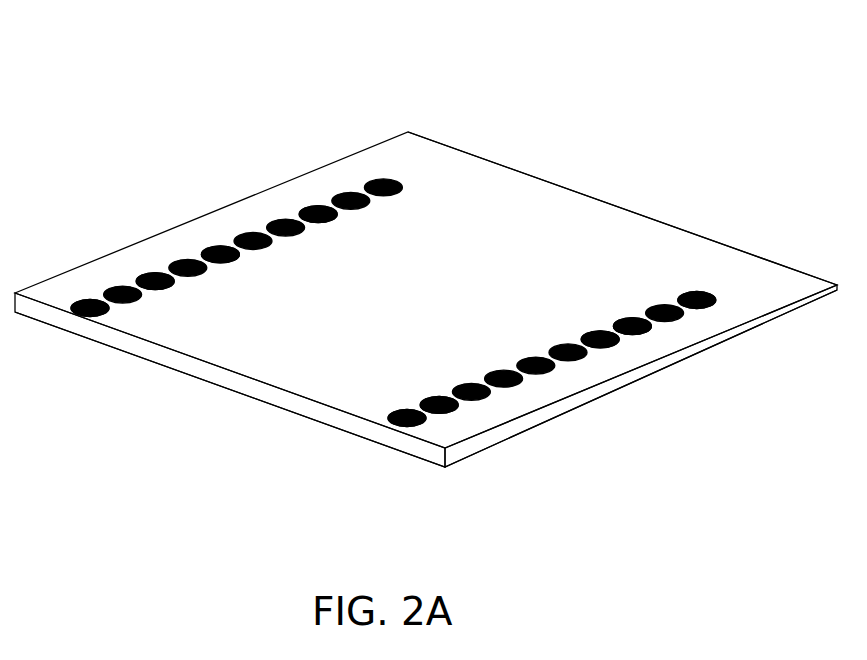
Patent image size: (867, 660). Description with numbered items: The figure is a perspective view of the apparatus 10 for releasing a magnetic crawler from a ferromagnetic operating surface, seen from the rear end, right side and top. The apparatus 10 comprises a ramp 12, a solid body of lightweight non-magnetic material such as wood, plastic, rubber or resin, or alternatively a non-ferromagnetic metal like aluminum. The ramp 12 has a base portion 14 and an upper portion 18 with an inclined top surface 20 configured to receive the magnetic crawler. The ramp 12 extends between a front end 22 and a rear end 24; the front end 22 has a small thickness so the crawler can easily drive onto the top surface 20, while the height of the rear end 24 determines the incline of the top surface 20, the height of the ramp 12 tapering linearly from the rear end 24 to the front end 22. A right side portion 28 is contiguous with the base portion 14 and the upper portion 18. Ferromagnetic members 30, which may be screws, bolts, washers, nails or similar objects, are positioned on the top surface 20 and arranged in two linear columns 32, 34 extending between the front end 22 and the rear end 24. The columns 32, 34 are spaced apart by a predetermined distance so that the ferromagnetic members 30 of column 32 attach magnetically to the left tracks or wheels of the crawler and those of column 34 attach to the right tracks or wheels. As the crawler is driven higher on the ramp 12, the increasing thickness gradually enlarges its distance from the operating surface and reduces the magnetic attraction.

The apparatus 10 is at (153, 98).
The ramp 12 is at (502, 188).
The base portion 14 is at (487, 450).
The upper portion 18 is at (192, 332).
The top surface 20 is at (345, 392).
The front end 22 is at (580, 192).
The rear end 24 is at (195, 368).
The right side portion 28 is at (552, 410).
The ferromagnetic members 30 is at (75, 303).
The column 32 is at (728, 286).
The column 34 is at (397, 168).